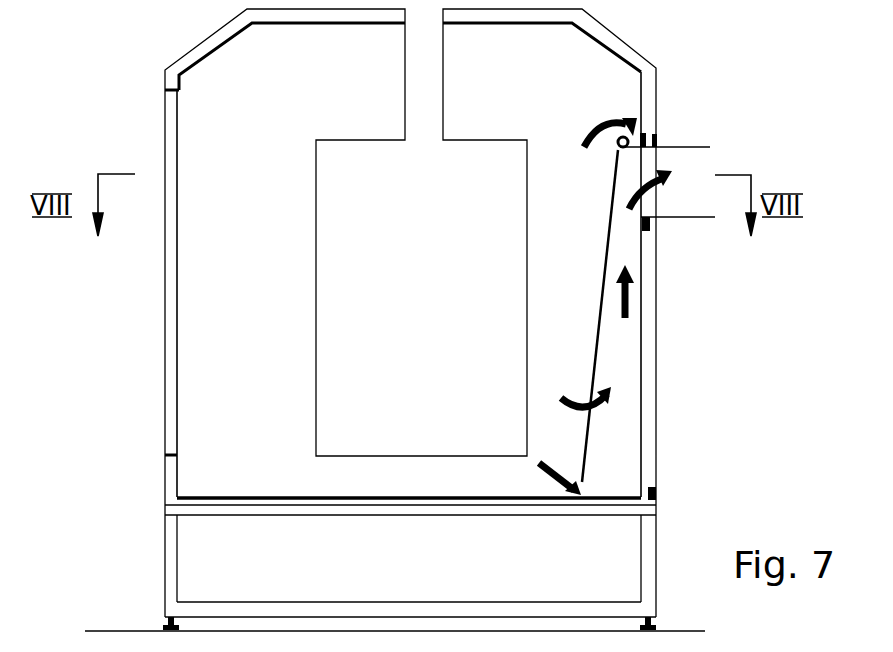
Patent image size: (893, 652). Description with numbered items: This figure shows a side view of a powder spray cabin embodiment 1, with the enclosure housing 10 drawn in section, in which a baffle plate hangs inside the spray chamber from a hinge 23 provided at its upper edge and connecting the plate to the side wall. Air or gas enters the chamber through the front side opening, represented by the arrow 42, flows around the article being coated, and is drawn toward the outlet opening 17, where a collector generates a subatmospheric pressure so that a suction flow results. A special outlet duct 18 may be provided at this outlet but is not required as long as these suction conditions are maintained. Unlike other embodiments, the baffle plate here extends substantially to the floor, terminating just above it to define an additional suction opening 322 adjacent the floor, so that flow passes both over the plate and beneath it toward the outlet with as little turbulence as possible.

The apparatus 1 is at (694, 120).
The housing 10 is at (622, 25).
The outlet opening 17 is at (650, 207).
The outlet duct 18 is at (706, 176).
The hinge 23 is at (626, 149).
The front side opening 42 is at (588, 316).
The suction opening 322 is at (606, 482).